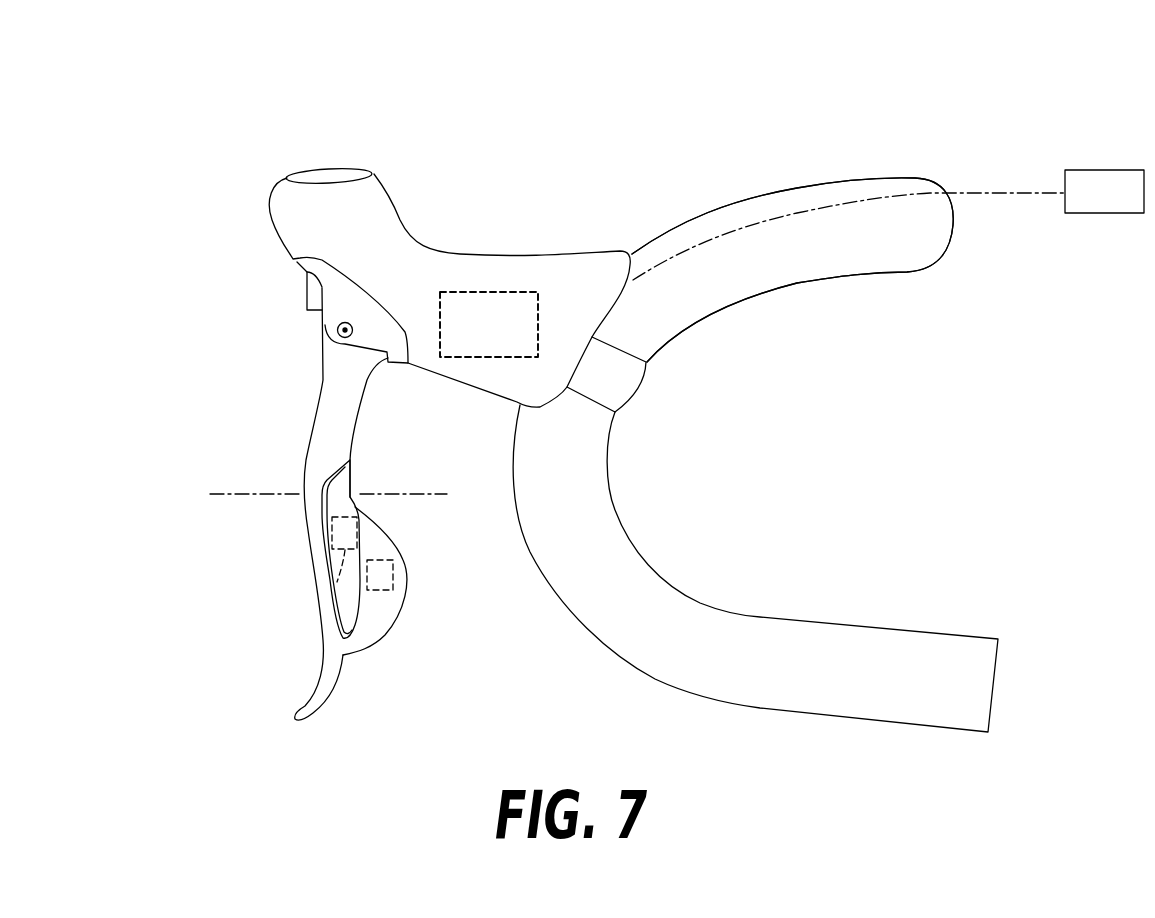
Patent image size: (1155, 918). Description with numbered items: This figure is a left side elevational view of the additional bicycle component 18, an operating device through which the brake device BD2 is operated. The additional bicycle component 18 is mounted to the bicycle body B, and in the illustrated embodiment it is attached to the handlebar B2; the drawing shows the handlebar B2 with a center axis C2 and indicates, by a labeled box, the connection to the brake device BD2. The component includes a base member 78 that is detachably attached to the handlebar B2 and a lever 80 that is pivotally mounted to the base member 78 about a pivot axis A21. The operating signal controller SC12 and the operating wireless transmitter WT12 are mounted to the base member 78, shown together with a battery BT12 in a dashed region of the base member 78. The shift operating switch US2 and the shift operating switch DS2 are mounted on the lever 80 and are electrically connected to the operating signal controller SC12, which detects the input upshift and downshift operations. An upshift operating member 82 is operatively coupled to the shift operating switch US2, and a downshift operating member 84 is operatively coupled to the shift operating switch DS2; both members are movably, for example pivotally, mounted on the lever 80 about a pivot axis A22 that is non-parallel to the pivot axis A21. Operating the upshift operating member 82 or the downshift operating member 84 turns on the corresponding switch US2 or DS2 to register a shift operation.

The additional bicycle component 18 is at (250, 207).
The base member 78 is at (328, 283).
The lever 80 is at (310, 450).
The upshift operating member 82 is at (345, 610).
The downshift operating member 84 is at (377, 603).
The pivot axis A21 is at (337, 330).
The pivot axis A22 is at (233, 497).
The shift operating switch US2 is at (330, 605).
The shift operating switch DS2 is at (394, 573).
The operating wireless transmitter WT12 is at (493, 292).
The operating signal controller SC12 is at (501, 253).
The battery BT12 is at (501, 269).
The bicycle body B is at (918, 123).
The handlebar B2 is at (868, 178).
The center axis of handlebar portion C2 is at (1002, 192).
The brake device BD2 is at (1124, 206).